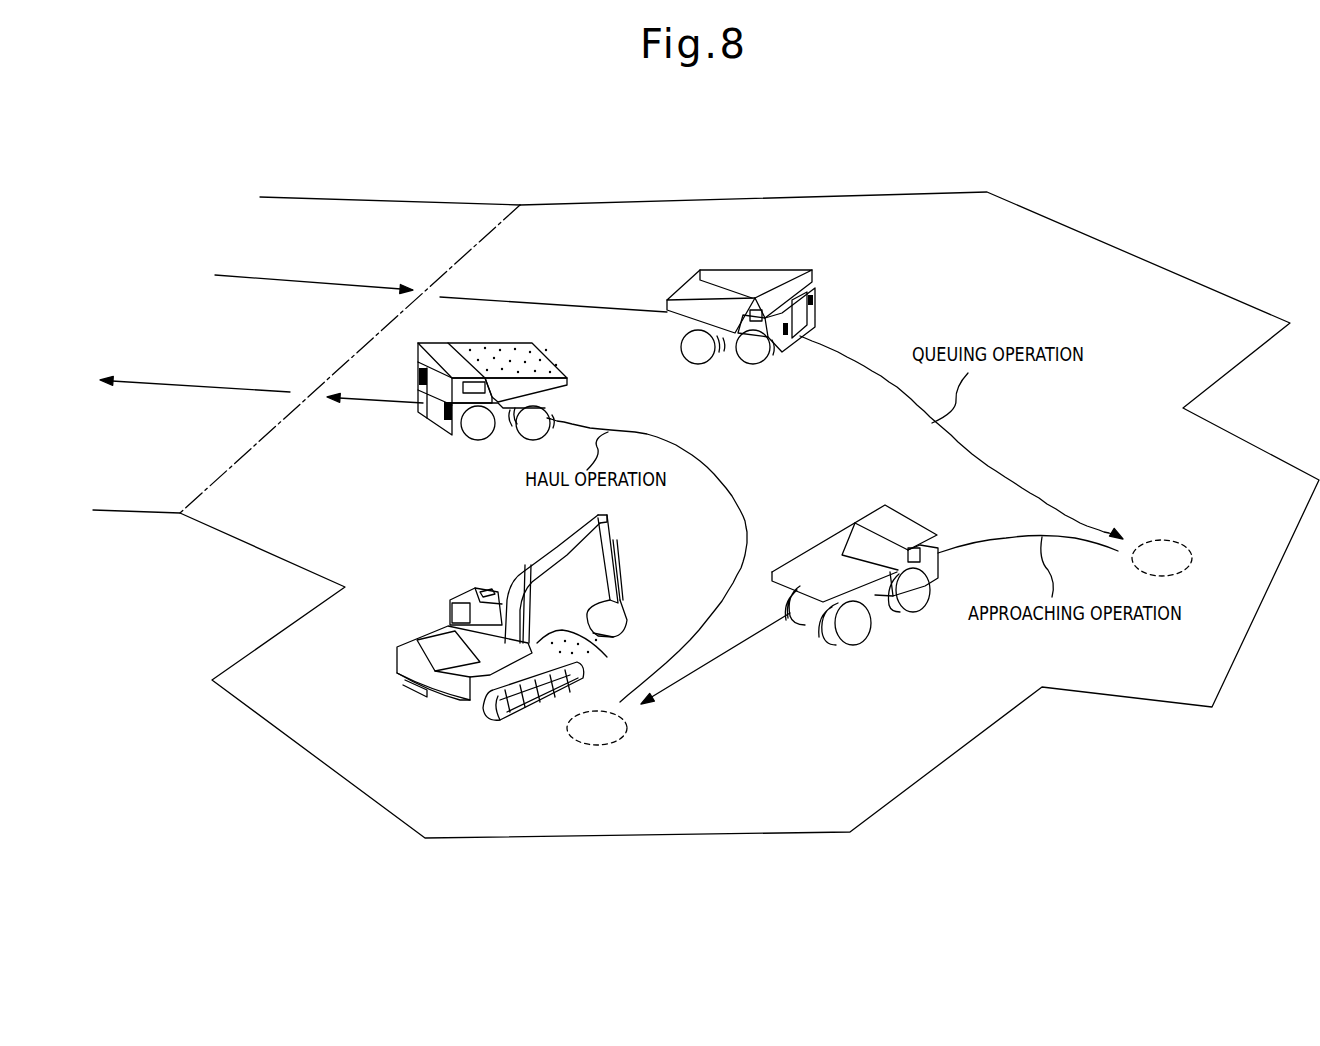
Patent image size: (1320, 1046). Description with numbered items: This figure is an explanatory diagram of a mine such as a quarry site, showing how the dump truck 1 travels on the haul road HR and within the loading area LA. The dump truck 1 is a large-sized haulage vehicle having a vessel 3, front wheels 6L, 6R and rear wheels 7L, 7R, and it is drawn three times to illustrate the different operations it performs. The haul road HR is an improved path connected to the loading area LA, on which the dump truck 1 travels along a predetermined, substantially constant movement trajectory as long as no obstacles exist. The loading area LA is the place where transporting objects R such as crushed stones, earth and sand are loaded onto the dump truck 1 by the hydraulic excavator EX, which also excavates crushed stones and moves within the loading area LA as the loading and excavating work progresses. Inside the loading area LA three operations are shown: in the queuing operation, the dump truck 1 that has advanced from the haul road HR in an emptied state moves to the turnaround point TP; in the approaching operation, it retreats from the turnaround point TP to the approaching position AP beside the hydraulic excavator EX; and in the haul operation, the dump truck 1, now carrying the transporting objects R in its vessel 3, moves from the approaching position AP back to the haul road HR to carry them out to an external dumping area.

The dump truck 1 is at (649, 446).
The vessel 3 is at (677, 447).
The front wheel 6L is at (478, 431).
The front wheel 6R is at (752, 358).
The rear wheel 7L is at (545, 416).
The rear wheel 7R is at (698, 358).
The transporting objects R is at (500, 350).
The hydraulic excavator EX is at (419, 612).
The haul road HR is at (400, 213).
The loading area LA is at (1096, 273).
The turnaround point TP is at (1160, 542).
The approaching position AP is at (620, 737).